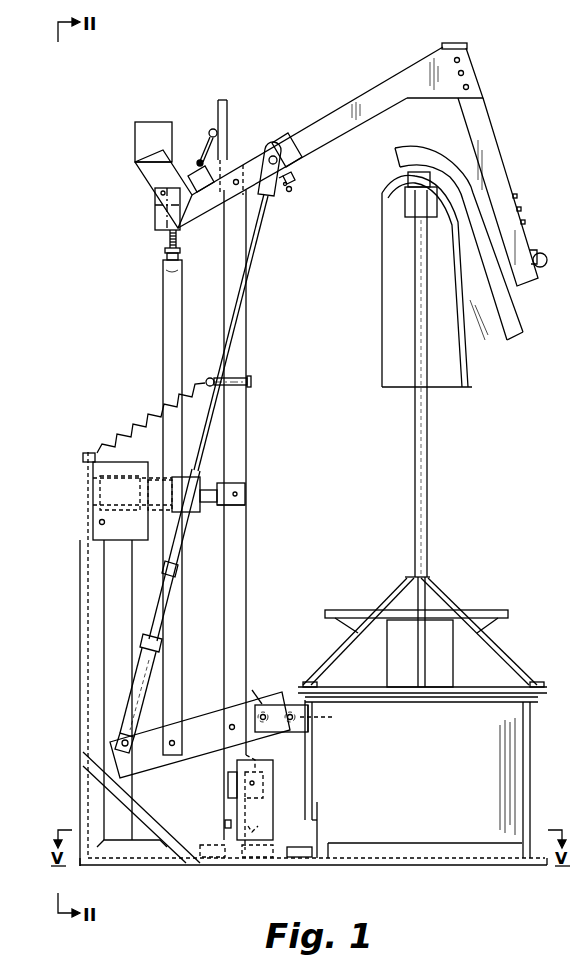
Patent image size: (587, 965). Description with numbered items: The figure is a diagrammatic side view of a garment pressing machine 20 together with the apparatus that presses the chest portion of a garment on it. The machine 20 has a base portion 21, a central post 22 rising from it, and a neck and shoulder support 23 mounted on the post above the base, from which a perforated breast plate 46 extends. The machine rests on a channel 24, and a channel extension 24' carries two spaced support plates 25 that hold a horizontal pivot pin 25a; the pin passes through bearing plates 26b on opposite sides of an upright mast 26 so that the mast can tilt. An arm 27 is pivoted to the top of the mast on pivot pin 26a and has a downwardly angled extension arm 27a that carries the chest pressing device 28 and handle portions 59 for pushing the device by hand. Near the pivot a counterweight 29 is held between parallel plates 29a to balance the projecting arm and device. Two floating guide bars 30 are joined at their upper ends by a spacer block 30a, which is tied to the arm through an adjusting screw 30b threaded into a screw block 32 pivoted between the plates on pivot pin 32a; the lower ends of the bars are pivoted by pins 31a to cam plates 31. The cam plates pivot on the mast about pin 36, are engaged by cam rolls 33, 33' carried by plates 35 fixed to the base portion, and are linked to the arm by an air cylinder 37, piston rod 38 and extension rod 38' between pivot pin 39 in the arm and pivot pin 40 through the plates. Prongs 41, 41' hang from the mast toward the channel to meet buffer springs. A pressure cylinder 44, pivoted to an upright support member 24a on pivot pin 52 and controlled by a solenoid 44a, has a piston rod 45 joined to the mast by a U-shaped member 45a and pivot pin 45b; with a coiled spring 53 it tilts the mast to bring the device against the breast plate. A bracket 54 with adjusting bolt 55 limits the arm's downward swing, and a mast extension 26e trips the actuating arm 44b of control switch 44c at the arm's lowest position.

The pressing machine 20 is at (482, 588).
The base portion 21 is at (530, 790).
The central post 22 is at (428, 443).
The neck and shoulder support 23 is at (405, 208).
The channel 24 is at (313, 878).
The support member 24a is at (98, 590).
The channel extension 24' is at (141, 824).
The support plates 25 is at (275, 803).
The pivot pin 25a is at (250, 783).
The mast 26 is at (247, 570).
The pivot pin 26a is at (237, 179).
The bearing plates 26b is at (274, 774).
The extension 26e is at (227, 108).
The arm 27 is at (352, 103).
The extension arm 27a is at (488, 113).
The pressing device 28 is at (418, 150).
The counterweight 29 is at (134, 125).
The plates 29a is at (140, 176).
The floating guide bars 30 is at (163, 312).
The spacer block 30a is at (166, 271).
The adjusting screw 30b is at (166, 242).
The cam plates 31 is at (216, 712).
The pivot pin 31a is at (172, 746).
The screw block 32 is at (183, 219).
The pivot pin 32a is at (159, 195).
The cam-engaging roll 33 is at (281, 693).
The cam-engaging roll 33' is at (332, 718).
The plates 35 is at (309, 726).
The pivot pin 36 is at (233, 724).
The air cylinder 37 is at (135, 700).
The piston rod 38 is at (167, 555).
The extension rod 38' is at (241, 332).
The pivot pin 39 is at (272, 148).
The pivot pin 40 is at (118, 743).
The prong 41 is at (201, 837).
The prong 41' is at (274, 839).
The pressure cylinder 44 is at (92, 492).
The solenoid 44a is at (84, 462).
The actuating arm 44b is at (209, 128).
The control switch 44c is at (188, 160).
The piston rod 45 is at (214, 490).
The U-shaped member 45a is at (238, 507).
The pivot pin 45b is at (238, 494).
The breast plate 46 is at (472, 364).
The pivot pin 52 is at (99, 524).
The coiled spring 53 is at (120, 440).
The bracket 54 is at (293, 178).
The adjusting bolt 55 is at (294, 190).
The handle portions 59 is at (545, 254).